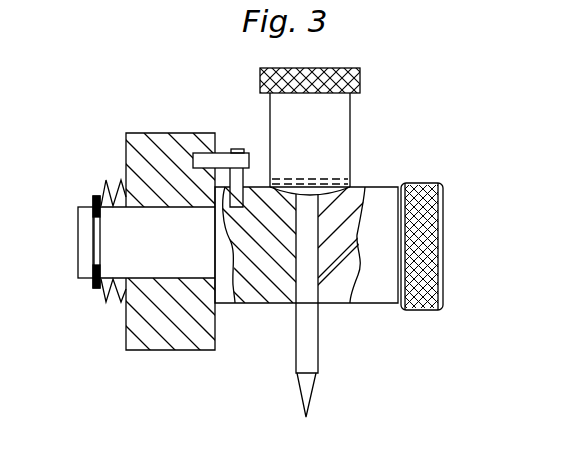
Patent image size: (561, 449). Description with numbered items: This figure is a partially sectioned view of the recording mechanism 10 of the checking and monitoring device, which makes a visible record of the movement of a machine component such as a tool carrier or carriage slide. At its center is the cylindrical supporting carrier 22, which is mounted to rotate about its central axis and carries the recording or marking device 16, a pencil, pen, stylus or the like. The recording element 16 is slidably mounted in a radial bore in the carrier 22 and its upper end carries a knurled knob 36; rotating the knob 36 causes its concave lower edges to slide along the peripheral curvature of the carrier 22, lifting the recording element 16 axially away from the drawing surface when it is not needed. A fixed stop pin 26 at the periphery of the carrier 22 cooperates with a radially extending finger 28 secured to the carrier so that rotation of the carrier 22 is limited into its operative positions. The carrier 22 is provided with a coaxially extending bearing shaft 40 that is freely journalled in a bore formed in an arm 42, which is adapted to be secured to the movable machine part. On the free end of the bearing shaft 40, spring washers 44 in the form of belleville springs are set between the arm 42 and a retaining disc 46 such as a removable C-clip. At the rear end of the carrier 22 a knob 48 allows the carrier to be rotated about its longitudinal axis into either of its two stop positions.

The recording mechanism 10 is at (325, 350).
The recording or marking device 16 is at (303, 353).
The cylindrical supporting carrier 22 is at (352, 198).
The stop pin 26 is at (222, 160).
The radially extending finger 28 is at (240, 148).
The knurled knob 36 is at (360, 82).
The bearing shaft 40 is at (86, 247).
The arm 42 is at (150, 155).
The spring washers 44 is at (107, 181).
The retaining disc 46 is at (95, 198).
The knob 48 is at (430, 242).